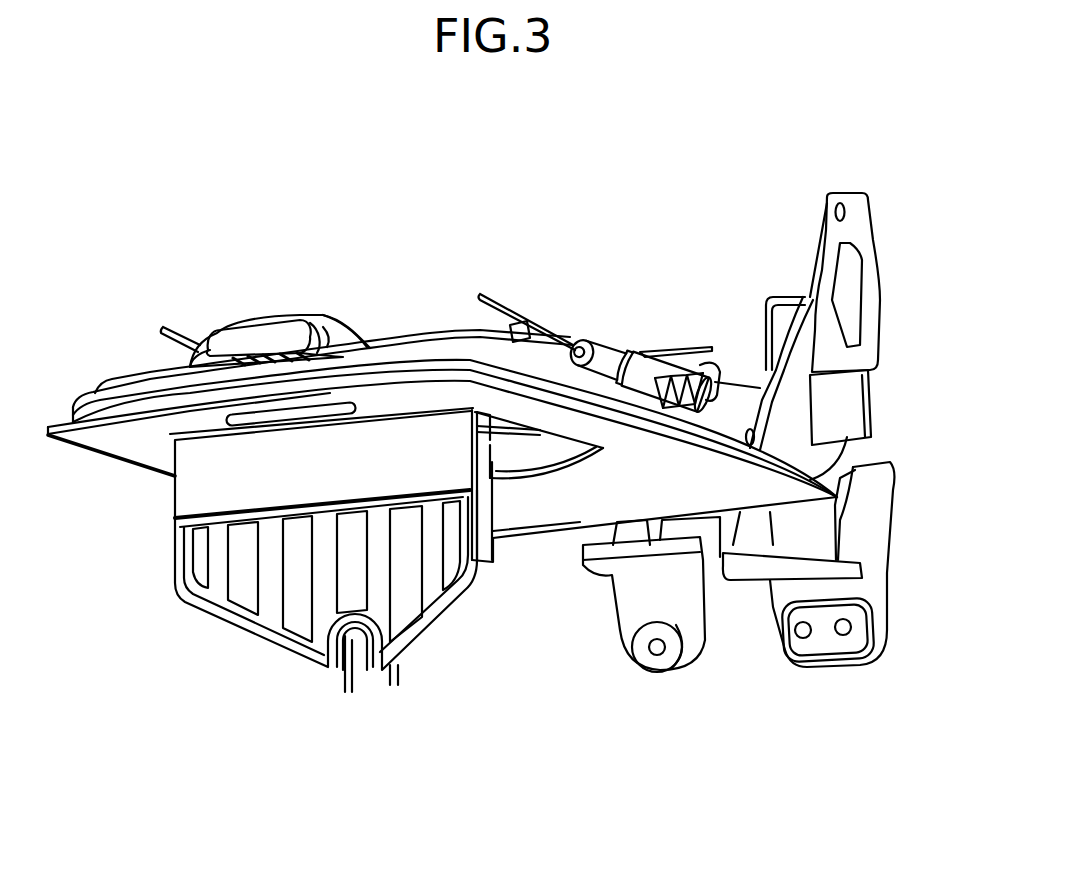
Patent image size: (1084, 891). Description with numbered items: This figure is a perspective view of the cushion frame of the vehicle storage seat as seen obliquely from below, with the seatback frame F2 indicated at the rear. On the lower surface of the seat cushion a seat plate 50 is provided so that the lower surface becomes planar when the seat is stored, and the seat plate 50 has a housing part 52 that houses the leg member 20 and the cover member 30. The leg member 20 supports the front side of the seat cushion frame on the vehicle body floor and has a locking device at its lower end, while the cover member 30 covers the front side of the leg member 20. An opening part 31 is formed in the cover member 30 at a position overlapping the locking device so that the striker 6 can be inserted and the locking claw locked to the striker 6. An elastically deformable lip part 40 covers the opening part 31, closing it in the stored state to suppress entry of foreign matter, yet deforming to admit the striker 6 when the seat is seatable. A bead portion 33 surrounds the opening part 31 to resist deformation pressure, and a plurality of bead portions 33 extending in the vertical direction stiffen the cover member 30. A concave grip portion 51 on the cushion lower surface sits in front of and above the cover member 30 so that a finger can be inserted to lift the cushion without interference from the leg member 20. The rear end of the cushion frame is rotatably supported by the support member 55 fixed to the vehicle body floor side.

The striker 6 is at (350, 662).
The leg member 20 is at (490, 560).
The cover member 30 is at (240, 612).
The opening part 31 is at (333, 625).
The bead portion 33 is at (180, 580).
The lip part 40 is at (363, 655).
The seat plate 50 is at (627, 477).
The grip portion 51 is at (250, 423).
The housing part 52 is at (557, 465).
The support member 55 is at (884, 497).
The seatback frame F2 is at (726, 208).